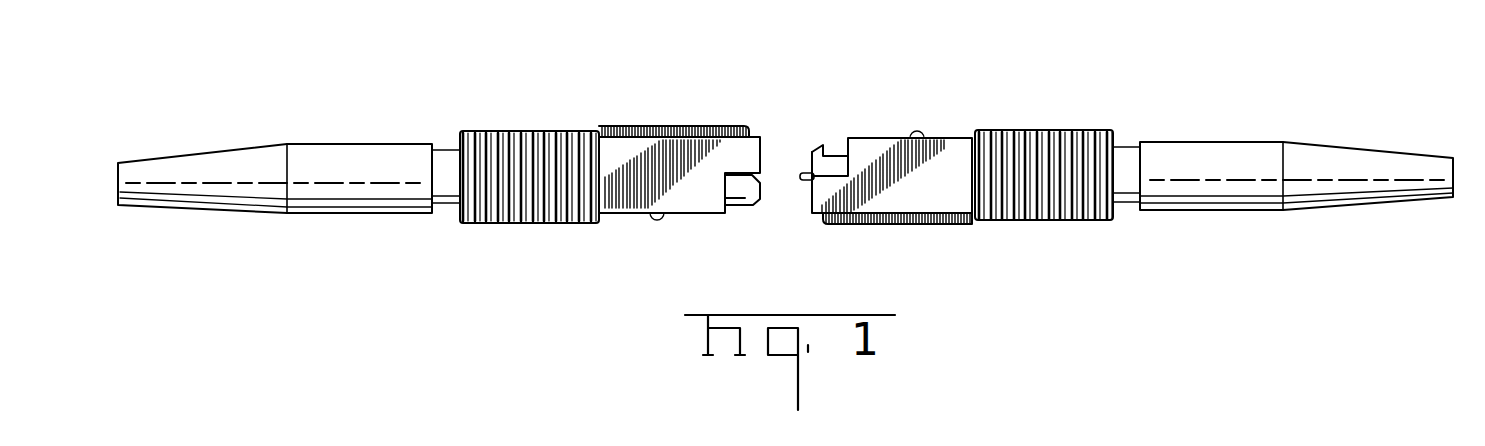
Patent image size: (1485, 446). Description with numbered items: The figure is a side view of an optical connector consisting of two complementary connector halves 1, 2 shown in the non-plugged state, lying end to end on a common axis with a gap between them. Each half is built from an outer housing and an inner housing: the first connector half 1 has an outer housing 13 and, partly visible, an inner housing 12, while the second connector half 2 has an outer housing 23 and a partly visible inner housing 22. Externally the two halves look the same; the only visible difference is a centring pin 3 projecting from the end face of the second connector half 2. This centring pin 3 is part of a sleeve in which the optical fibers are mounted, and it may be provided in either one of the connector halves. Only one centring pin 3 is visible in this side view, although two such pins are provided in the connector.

The connector half 1 is at (526, 114).
The connector half 2 is at (1026, 118).
The centring pin 3 is at (800, 172).
The inner housing 12 is at (741, 186).
The outer housing 13 is at (647, 183).
The inner housing 22 is at (833, 162).
The outer housing 23 is at (932, 197).